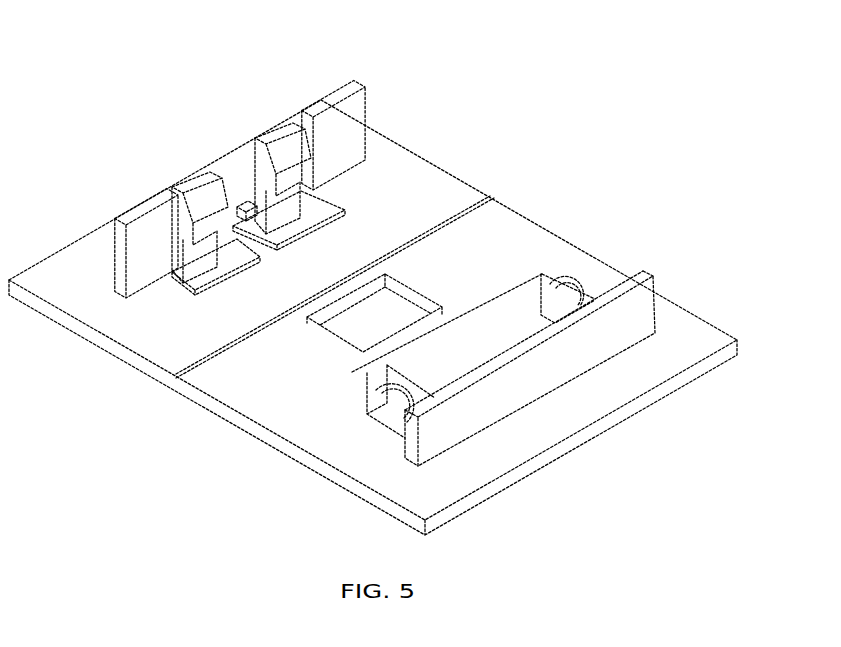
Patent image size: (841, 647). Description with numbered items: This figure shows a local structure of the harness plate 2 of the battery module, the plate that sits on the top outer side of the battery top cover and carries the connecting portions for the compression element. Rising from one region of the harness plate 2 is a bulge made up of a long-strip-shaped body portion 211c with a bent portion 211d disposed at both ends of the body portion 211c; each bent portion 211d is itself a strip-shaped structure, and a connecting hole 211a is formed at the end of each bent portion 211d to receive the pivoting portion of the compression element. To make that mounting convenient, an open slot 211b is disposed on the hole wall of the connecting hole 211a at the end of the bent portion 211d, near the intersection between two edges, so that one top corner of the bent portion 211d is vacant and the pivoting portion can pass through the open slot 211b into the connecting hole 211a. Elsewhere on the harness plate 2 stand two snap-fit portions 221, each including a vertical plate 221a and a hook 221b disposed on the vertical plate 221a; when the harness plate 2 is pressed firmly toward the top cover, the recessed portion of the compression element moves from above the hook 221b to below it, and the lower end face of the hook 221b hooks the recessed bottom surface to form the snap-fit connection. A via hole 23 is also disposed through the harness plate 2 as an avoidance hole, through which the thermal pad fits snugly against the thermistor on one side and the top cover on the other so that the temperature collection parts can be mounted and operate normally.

The harness plate 2 is at (167, 338).
The via hole 23 is at (355, 328).
The connecting hole 211a is at (558, 297).
The open slot 211b is at (380, 378).
The body portion 211c is at (481, 331).
The bent portion 211d is at (588, 285).
The snap-fit portion 221 is at (254, 159).
The vertical plate 221a is at (273, 210).
The hook 221b is at (288, 147).